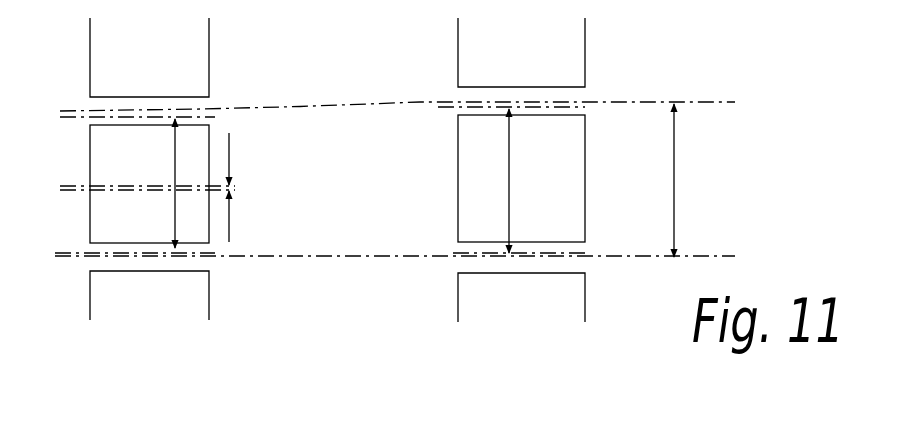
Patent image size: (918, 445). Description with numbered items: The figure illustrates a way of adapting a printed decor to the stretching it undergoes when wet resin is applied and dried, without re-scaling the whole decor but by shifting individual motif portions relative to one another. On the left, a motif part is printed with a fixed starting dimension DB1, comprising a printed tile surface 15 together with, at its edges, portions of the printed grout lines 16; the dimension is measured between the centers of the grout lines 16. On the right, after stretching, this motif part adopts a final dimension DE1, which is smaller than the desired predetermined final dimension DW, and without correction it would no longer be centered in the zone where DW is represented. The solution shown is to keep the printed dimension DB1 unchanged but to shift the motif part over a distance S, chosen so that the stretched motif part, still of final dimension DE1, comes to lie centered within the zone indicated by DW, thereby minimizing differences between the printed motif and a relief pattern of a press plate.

The printed tile surface 15 is at (97, 65).
The printed grout lines 16 is at (95, 120).
The starting dimension DB1 is at (175, 172).
The final dimension DE1 is at (533, 181).
The desired predetermined final dimension DW is at (696, 180).
The shift distance S is at (229, 233).